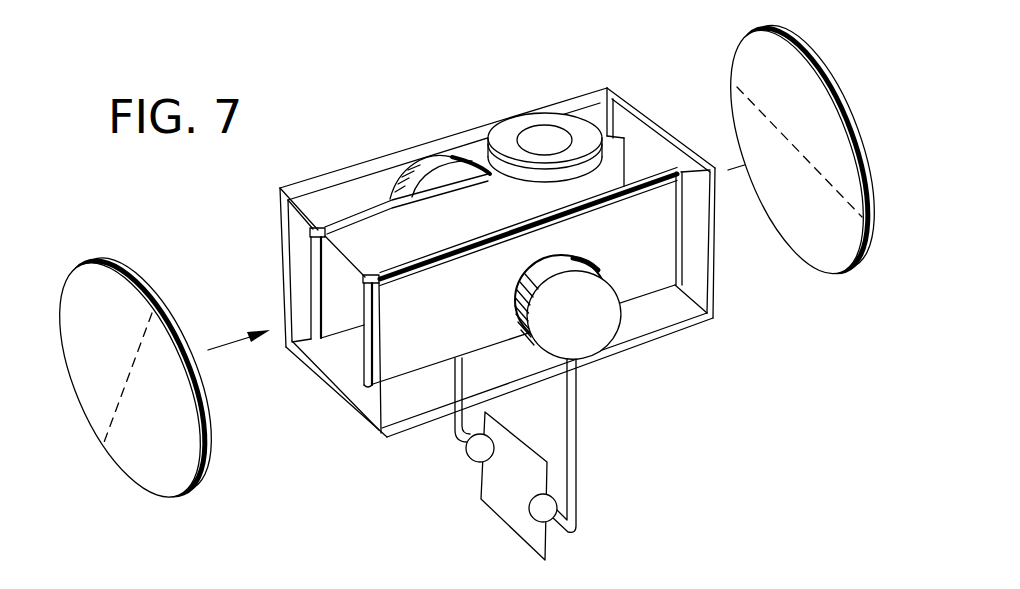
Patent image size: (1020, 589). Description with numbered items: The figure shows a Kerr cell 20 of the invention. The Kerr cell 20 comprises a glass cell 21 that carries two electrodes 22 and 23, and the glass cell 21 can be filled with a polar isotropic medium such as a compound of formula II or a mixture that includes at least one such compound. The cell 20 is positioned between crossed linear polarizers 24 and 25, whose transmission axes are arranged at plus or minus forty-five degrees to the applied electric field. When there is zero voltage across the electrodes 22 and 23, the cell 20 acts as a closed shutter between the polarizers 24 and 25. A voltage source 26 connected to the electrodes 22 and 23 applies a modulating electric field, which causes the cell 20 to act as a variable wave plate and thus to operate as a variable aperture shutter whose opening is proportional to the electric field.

The Kerr cell 20 is at (297, 263).
The glass cell 21 is at (499, 406).
The electrode 22 is at (387, 184).
The electrode 23 is at (649, 297).
The linear polarizer 24 is at (113, 288).
The linear polarizer 25 is at (750, 47).
The voltage source 26 is at (516, 492).